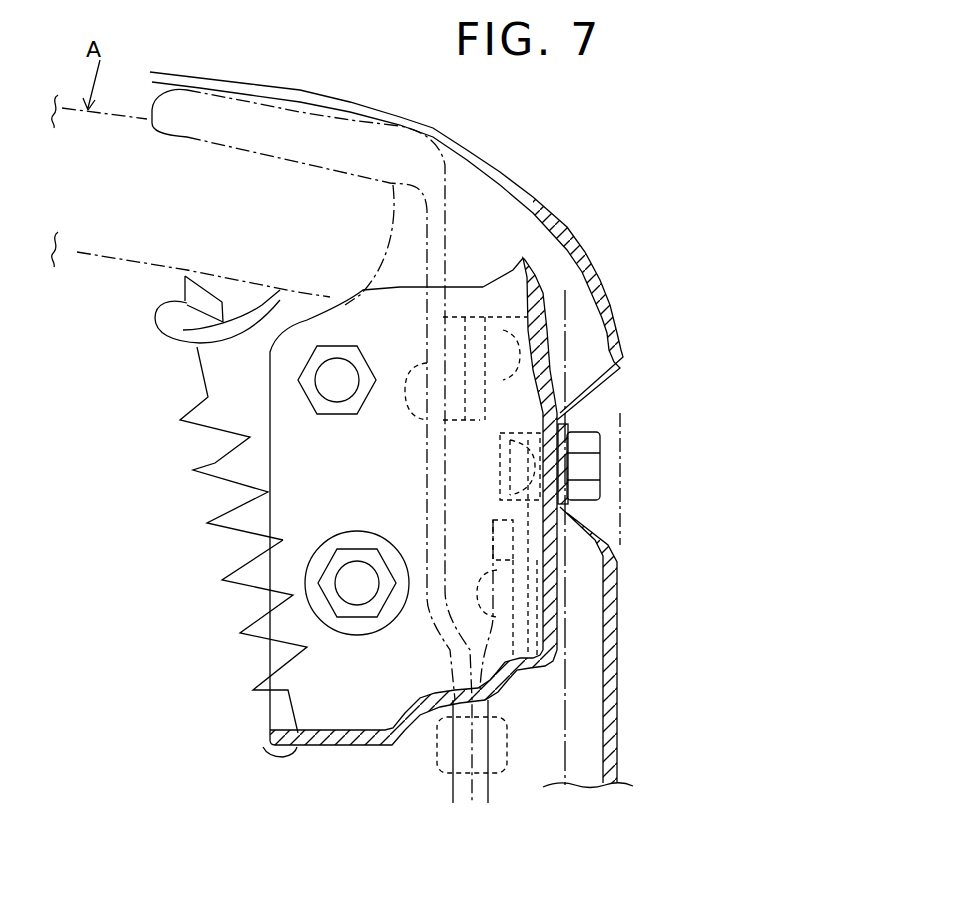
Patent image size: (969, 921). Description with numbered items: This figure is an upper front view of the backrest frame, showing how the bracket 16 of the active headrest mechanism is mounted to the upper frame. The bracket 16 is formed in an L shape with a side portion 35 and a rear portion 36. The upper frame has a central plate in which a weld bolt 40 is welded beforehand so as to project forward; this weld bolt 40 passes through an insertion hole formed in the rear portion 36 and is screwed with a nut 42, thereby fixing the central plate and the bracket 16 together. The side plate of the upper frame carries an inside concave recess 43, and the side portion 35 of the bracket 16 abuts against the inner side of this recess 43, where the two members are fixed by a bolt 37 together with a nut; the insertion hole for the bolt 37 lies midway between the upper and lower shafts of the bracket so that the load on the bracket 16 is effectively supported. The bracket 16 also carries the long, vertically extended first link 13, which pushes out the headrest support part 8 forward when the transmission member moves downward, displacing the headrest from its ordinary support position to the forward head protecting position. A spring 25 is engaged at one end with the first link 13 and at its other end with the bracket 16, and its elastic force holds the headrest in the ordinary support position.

The headrest support part 8 is at (77, 252).
The first link 13 is at (248, 150).
The bracket 16 is at (339, 764).
The spring 25 is at (193, 468).
The side portion 35 is at (545, 336).
The rear portion 36 is at (263, 567).
The bolt 37 is at (605, 458).
The weld bolt 40 is at (337, 383).
The nut 42 is at (296, 368).
The inside concave recess 43 is at (605, 405).